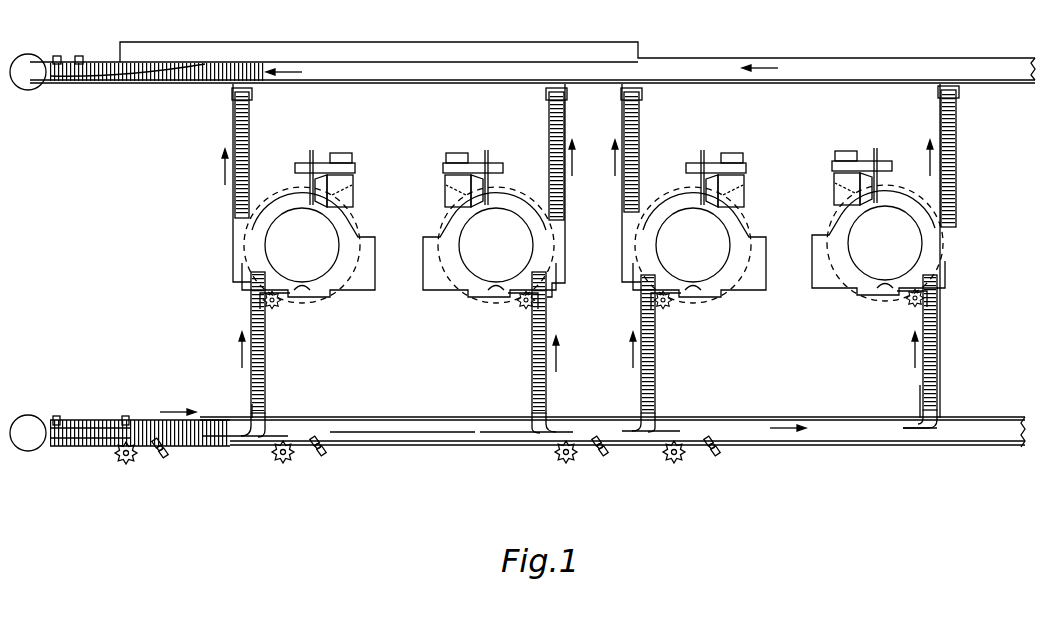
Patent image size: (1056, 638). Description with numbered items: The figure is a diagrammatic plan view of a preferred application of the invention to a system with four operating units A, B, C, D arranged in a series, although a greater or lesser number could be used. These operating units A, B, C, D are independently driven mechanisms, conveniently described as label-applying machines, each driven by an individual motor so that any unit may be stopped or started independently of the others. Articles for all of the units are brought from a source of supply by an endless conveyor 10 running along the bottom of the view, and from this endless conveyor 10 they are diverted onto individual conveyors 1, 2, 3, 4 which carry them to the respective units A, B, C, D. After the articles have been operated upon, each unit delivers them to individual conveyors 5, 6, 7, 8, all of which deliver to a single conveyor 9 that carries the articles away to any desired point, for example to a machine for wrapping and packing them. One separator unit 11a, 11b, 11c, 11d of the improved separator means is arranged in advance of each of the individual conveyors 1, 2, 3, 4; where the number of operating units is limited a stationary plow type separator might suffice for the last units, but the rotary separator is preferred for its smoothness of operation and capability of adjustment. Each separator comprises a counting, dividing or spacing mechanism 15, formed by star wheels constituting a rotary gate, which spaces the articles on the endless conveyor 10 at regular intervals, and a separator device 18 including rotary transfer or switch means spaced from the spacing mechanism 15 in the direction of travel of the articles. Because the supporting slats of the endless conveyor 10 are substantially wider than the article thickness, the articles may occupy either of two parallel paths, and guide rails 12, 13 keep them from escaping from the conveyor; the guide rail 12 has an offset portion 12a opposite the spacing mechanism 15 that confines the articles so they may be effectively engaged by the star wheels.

The individual conveyor 1 is at (265, 372).
The individual conveyor 2 is at (546, 372).
The individual conveyor 3 is at (655, 372).
The individual conveyor 4 is at (938, 356).
The individual delivery conveyor 5 is at (250, 154).
The individual delivery conveyor 6 is at (549, 145).
The individual delivery conveyor 7 is at (640, 150).
The individual delivery conveyor 8 is at (957, 142).
The single conveyor 9 is at (462, 62).
The endless conveyor 10 is at (40, 449).
The separator unit 11a is at (130, 470).
The separator unit 11b is at (290, 470).
The separator unit 11c is at (575, 470).
The separator unit 11d is at (686, 470).
The guide rail 12 is at (374, 417).
The offset portion 12a is at (110, 430).
The guide rail 13 is at (386, 446).
The counting, dividing or spacing mechanism 15 is at (120, 458).
The separator device 18 is at (168, 463).
The operating unit A is at (322, 238).
The operating unit B is at (518, 241).
The operating unit C is at (723, 240).
The operating unit D is at (905, 243).